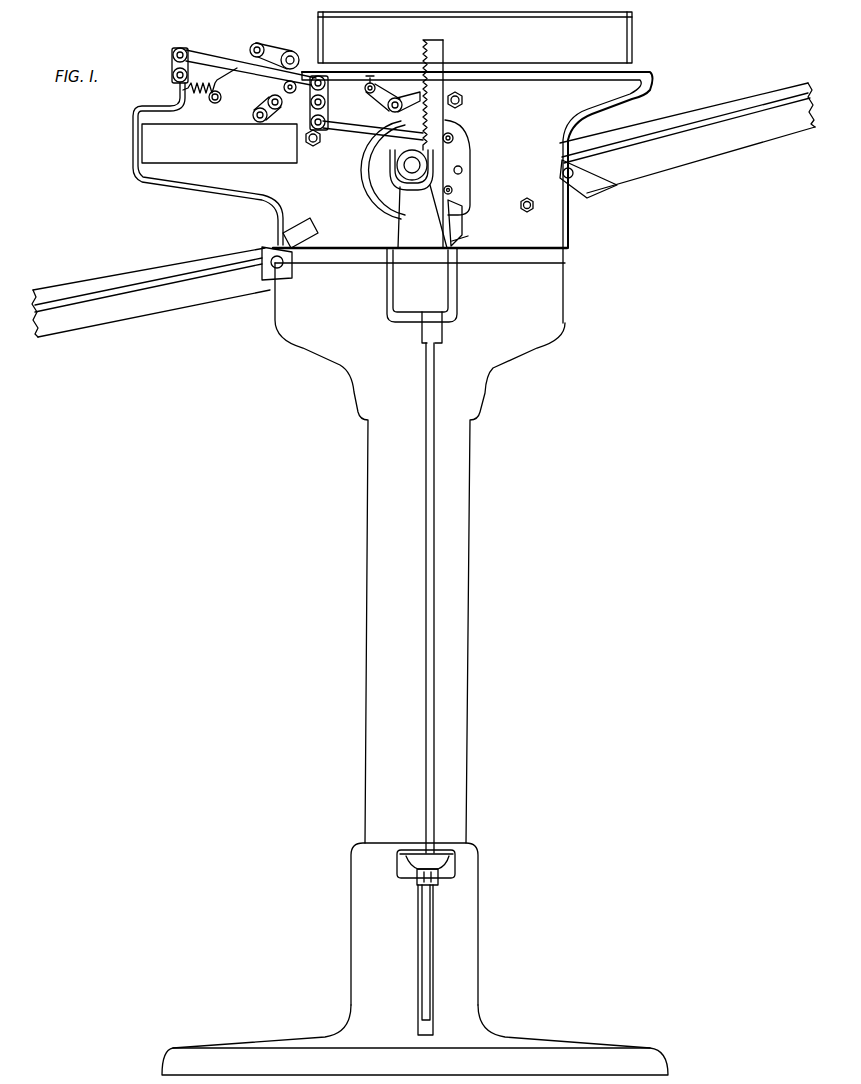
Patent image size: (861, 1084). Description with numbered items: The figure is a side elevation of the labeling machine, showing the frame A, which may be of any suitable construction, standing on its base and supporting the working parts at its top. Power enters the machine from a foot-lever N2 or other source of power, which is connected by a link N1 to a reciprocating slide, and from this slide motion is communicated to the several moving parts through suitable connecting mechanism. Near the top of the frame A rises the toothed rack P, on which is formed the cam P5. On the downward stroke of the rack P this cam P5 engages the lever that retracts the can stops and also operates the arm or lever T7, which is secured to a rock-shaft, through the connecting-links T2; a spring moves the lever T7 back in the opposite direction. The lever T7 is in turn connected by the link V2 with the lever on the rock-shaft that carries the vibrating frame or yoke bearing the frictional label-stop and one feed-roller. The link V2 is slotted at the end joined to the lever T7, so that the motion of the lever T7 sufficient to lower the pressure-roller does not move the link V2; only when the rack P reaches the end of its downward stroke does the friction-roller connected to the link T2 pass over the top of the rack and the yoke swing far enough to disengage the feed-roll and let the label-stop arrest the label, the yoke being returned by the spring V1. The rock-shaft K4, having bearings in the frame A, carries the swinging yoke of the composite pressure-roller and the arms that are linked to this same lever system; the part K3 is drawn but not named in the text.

The frame A is at (415, 661).
The rack P is at (436, 66).
The cam P5 is at (444, 82).
The link N1 is at (432, 733).
The foot-lever N2 is at (436, 863).
The connecting-links T2 is at (347, 128).
The arm or lever T7 is at (327, 111).
The spring V1 is at (219, 127).
The link V2 is at (217, 66).
The spring K3 is at (270, 104).
The rock-shaft K4 is at (282, 104).